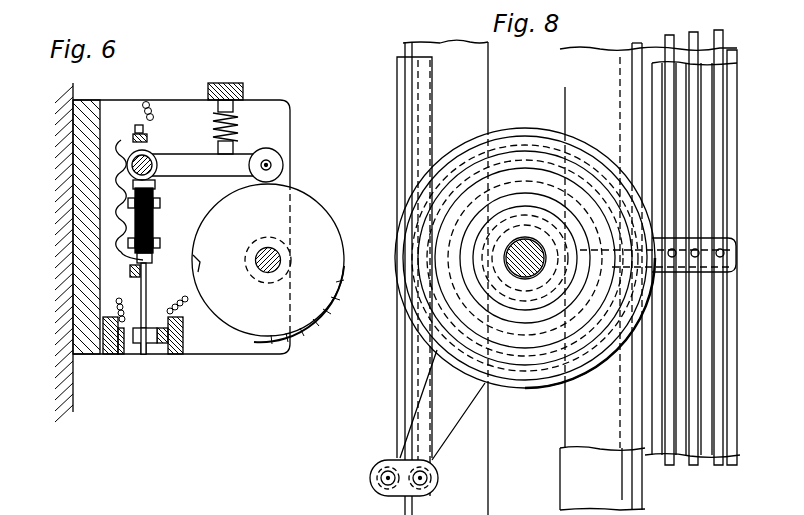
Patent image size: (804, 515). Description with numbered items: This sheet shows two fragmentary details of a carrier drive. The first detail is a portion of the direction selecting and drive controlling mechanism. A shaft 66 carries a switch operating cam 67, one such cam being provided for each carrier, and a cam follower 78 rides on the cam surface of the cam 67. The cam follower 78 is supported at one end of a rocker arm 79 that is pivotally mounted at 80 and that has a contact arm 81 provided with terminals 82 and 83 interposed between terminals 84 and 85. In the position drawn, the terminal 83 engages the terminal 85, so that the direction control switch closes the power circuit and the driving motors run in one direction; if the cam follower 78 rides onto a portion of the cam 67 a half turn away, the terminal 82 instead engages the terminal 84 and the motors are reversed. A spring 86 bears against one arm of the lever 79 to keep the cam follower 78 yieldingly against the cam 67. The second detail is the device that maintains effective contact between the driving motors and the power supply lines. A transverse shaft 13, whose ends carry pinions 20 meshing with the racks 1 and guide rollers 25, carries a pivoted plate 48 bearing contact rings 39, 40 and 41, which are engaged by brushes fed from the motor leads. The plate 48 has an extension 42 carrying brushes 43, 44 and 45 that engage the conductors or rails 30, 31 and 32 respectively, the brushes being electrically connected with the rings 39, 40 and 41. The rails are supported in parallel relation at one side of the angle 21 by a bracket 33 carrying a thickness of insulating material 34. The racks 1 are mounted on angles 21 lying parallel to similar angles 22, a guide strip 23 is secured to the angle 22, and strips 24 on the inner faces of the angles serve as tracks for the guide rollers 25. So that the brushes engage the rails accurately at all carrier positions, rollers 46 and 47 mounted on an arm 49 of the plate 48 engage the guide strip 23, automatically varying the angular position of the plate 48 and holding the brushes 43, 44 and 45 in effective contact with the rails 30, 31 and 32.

In FIG. 8, the rack 1 is at (565, 100).
In FIG. 8, the transverse shaft 13 is at (525, 270).
In FIG. 8, the pinion 20 is at (487, 278).
In FIG. 8, the angle 21 is at (625, 62).
In FIG. 8, the angle 22 is at (403, 45).
In FIG. 8, the guide strip 23 is at (398, 340).
In FIG. 8, the strip 24 is at (420, 73).
In FIG. 8, the guide roller 25 is at (542, 355).
In FIG. 8, the conductor or rail 30 is at (671, 466).
In FIG. 8, the conductor or rail 31 is at (695, 466).
In FIG. 8, the conductor or rail 32 is at (719, 466).
In FIG. 8, the bracket 33 is at (737, 462).
In FIG. 8, the insulating material 34 is at (733, 432).
In FIG. 8, the contact ring 39 is at (510, 150).
In FIG. 8, the contact ring 40 is at (523, 172).
In FIG. 8, the contact ring 41 is at (481, 214).
In FIG. 8, the extension 42 is at (737, 242).
In FIG. 8, the brush 43 is at (676, 252).
In FIG. 8, the brush 44 is at (698, 252).
In FIG. 8, the brush 45 is at (724, 254).
In FIG. 8, the roller 46 is at (380, 483).
In FIG. 8, the roller 47 is at (438, 478).
In FIG. 8, the pivoted plate 48 is at (443, 152).
In FIG. 8, the arm 49 is at (452, 421).
In FIG. 6, the shaft 66 is at (280, 250).
In FIG. 6, the switch operating cam 67 is at (328, 237).
In FIG. 6, the cam follower 78 is at (284, 160).
In FIG. 6, the rocker arm 79 is at (195, 170).
In FIG. 6, the pivot 80 is at (146, 158).
In FIG. 6, the contact arm 81 is at (148, 262).
In FIG. 6, the terminal 82 is at (143, 357).
In FIG. 6, the terminal 83 is at (156, 330).
In FIG. 6, the terminal 84 is at (117, 357).
In FIG. 6, the terminal 85 is at (160, 357).
In FIG. 6, the spring 86 is at (236, 122).